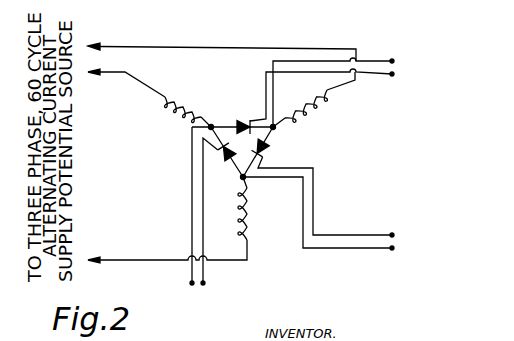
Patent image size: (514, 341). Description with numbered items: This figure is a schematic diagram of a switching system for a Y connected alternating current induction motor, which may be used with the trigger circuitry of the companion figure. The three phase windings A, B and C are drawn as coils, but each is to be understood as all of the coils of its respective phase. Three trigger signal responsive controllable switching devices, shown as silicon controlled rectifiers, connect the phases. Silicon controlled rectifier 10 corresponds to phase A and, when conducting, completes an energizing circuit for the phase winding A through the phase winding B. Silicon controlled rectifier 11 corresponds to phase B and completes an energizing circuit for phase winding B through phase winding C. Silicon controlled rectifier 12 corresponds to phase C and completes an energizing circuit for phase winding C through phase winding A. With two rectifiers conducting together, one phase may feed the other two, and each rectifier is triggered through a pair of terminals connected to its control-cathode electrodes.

The phase winding A is at (182, 100).
The phase winding B is at (322, 108).
The phase winding C is at (252, 222).
The silicon controlled rectifier 10 is at (242, 120).
The silicon controlled rectifier 11 is at (270, 148).
The silicon controlled rectifier 12 is at (222, 153).